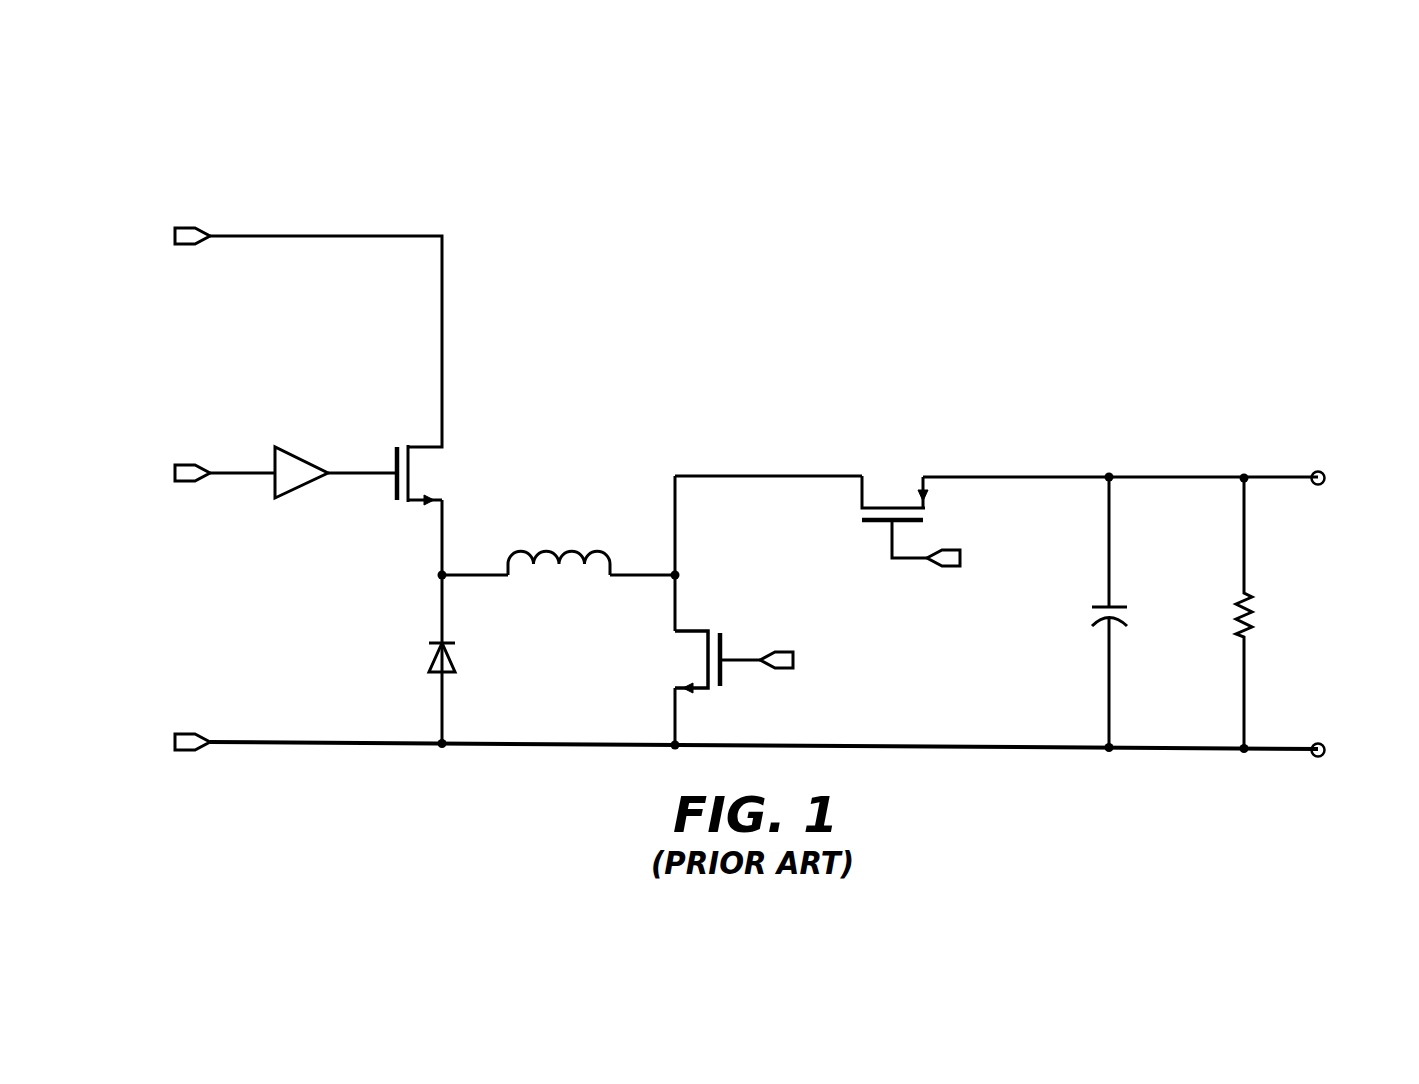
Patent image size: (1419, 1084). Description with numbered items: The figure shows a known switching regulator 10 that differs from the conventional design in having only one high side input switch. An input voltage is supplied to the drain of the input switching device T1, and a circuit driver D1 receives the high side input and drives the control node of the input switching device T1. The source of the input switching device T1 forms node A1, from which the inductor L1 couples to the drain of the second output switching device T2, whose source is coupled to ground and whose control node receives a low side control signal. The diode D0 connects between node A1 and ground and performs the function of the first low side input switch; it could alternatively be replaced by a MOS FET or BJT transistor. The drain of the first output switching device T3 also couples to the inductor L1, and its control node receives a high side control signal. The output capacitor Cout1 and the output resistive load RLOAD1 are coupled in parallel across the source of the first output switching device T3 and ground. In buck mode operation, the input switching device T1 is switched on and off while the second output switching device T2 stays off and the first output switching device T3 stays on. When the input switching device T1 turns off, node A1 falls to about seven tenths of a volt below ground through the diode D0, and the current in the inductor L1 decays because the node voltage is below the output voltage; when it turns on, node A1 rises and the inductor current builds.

The switching regulator 10 is at (754, 489).
The input switching device T1 is at (441, 475).
The second output switching device T2 is at (676, 660).
The first output switching device T3 is at (895, 474).
The circuit driver D1 is at (303, 412).
The diode D0 is at (467, 673).
The node A1 is at (419, 569).
The inductor L1 is at (559, 535).
The output capacitor Cout1 is at (1144, 612).
The output resistive load RLOAD1 is at (1302, 613).